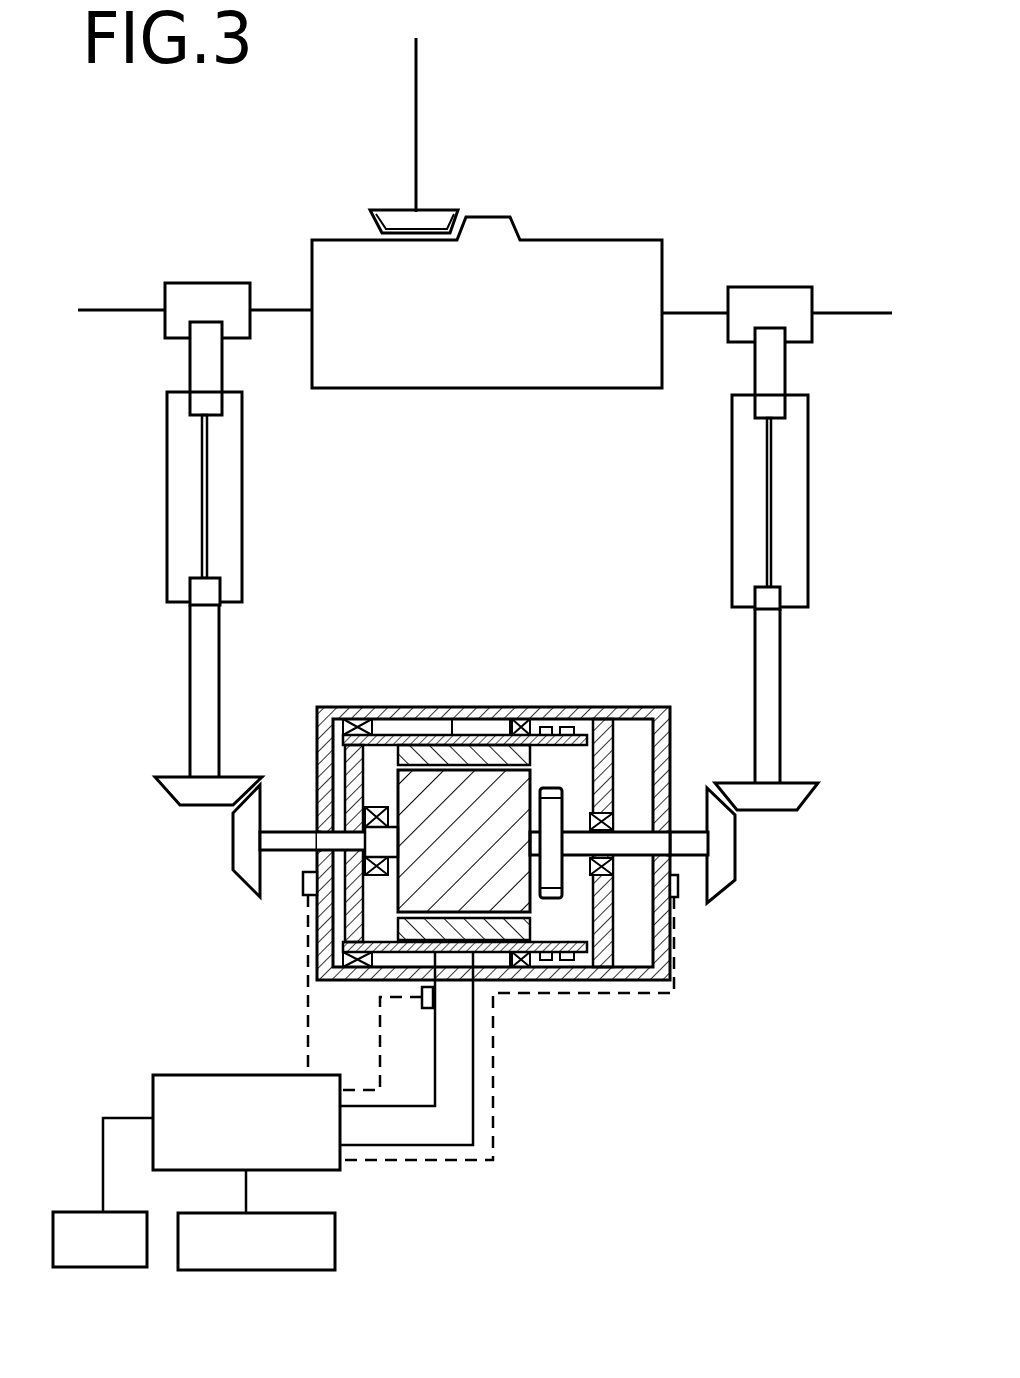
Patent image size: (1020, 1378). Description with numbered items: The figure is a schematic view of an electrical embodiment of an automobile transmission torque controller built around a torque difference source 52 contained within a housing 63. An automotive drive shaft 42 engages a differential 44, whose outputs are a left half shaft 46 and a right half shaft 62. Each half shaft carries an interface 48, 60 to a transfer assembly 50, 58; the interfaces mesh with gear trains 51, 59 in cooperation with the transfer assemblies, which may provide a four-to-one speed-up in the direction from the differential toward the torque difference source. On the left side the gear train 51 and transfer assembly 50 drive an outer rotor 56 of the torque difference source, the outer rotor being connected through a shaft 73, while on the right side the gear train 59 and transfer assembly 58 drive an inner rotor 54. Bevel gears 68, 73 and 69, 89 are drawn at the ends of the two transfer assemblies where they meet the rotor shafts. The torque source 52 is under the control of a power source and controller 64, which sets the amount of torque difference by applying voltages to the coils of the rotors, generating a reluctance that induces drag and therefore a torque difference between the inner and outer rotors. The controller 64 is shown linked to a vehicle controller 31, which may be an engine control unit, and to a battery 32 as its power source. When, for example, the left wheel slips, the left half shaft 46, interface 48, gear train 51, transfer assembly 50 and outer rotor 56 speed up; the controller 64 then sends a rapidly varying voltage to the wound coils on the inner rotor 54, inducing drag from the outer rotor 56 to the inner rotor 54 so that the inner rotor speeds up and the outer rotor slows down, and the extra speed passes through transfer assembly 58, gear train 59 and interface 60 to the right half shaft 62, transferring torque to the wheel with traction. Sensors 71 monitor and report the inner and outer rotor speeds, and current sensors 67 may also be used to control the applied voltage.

The vehicle controller 31 is at (100, 1267).
The battery 32 is at (250, 1270).
The automotive drive shaft 42 is at (418, 154).
The differential 44 is at (595, 240).
The left half shaft 46 is at (125, 310).
The interface 48 is at (208, 283).
The transfer assembly 50 is at (167, 472).
The gear train 51 is at (154, 388).
The torque difference source 52 is at (648, 988).
The inner rotor 54 is at (680, 865).
The outer rotor 56 is at (442, 707).
The transfer assembly 58 is at (808, 461).
The gear train 59 is at (803, 376).
The interface 60 is at (767, 287).
The right half shaft 62 is at (846, 313).
The housing 63 is at (560, 707).
The power source and controller 64 is at (153, 1100).
The current sensors 67 is at (420, 988).
The front bevel gear 68 is at (160, 790).
The rear bevel gear 69 is at (805, 800).
The sensors 71 is at (303, 880).
The shaft 73 is at (245, 885).
The bevel gear 89 is at (720, 885).